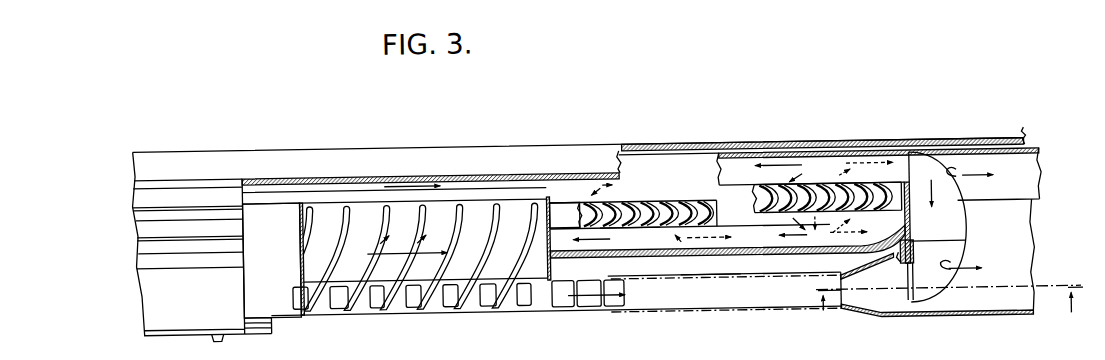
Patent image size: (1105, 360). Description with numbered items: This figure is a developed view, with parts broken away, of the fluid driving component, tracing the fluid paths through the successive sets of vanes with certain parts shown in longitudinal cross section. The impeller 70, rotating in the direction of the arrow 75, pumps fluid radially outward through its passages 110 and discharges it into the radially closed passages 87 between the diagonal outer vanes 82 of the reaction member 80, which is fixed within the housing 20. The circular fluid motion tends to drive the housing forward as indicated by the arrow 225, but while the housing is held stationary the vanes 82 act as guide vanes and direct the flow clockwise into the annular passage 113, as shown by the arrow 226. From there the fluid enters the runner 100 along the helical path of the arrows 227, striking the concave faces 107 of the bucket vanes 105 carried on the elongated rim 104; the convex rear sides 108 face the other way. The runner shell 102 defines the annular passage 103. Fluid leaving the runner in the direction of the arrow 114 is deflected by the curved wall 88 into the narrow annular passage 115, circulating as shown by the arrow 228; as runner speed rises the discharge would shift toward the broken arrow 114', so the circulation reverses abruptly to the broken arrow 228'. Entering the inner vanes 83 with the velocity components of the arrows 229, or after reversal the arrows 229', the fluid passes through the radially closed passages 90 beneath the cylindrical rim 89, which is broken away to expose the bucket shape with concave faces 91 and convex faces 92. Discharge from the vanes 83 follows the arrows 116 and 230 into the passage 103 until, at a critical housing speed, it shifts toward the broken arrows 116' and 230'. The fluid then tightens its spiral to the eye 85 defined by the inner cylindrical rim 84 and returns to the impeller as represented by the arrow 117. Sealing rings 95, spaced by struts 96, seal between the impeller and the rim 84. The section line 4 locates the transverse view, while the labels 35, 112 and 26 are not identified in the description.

The housing 20 is at (237, 325).
The casing break 35 is at (197, 333).
The arrow 226 is at (408, 189).
The reaction member 80 is at (291, 308).
The outer set of vanes 82 is at (465, 304).
The radially closed passages 87 is at (503, 268).
The diffuser vane 112 is at (405, 262).
The arrow 225 is at (368, 308).
The impeller passages 110 is at (568, 304).
The arrow 75 is at (617, 309).
The impeller 70 is at (563, 313).
The circumferential annular passage 113 is at (541, 195).
The runner 100 is at (563, 212).
The arrows 227 is at (602, 178).
The outer combustor casing 26 is at (705, 158).
The elongated rim 104 is at (722, 147).
The shell 102 is at (717, 160).
The arrow 230 is at (811, 145).
The bucket vanes 105 is at (662, 210).
The concave face 107 is at (642, 206).
The convex rear side 108 is at (673, 206).
The cylindrical rim 89 is at (757, 200).
The radially closed passages 90 is at (780, 196).
The arrow 116 is at (825, 161).
The annular fluid passage 103 is at (820, 165).
The inner set of vanes 83 is at (833, 200).
The broken arrow 116' is at (865, 140).
The broken line arrow 230' is at (868, 169).
The concave faces 91 is at (880, 197).
The convex faces 92 is at (911, 190).
The inner cylindrical rim 84 is at (926, 166).
The arrow 117 is at (932, 198).
The eye 85 is at (958, 231).
The sealing rings 95 is at (886, 248).
The pins or struts 96 is at (900, 270).
The curved wall 88 is at (683, 258).
The arrow 228 is at (592, 257).
The broken arrow 228' is at (714, 255).
The arrows 229 is at (725, 285).
The arrows 229' is at (725, 259).
The arrow 114 is at (724, 289).
The annular passage 115 is at (667, 243).
The broken arrow 114' is at (710, 289).
The section line 4- 4 is at (946, 306).